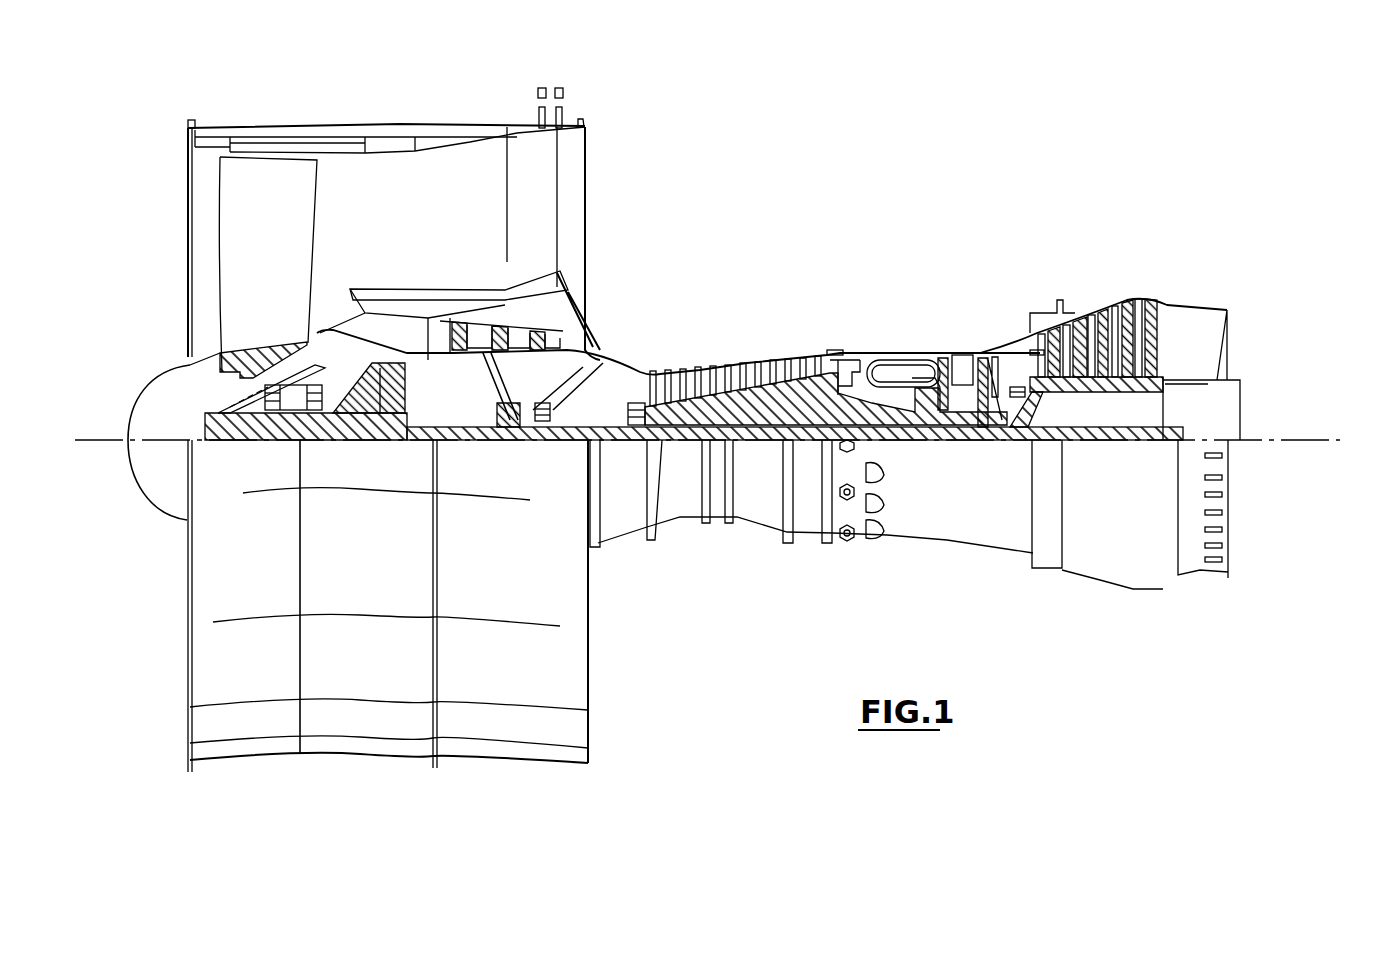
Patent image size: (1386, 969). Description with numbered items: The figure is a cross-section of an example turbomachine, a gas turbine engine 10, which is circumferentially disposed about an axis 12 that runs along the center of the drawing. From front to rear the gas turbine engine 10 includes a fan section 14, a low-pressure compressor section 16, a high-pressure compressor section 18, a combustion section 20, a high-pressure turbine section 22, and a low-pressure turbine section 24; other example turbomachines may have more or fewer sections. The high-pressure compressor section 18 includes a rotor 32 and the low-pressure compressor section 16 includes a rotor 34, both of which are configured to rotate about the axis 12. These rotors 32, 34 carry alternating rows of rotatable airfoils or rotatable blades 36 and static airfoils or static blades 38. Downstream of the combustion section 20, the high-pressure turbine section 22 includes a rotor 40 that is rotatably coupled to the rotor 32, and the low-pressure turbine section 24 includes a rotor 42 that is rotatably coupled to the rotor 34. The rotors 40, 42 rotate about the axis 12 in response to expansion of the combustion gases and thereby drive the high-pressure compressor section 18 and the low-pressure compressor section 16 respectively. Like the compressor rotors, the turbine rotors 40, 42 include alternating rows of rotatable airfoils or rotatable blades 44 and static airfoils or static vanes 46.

The gas turbine engine 10 is at (915, 168).
The axis 12 is at (1332, 440).
The fan section 14 is at (303, 124).
The low-pressure compressor section 16 is at (488, 383).
The high-pressure compressor section 18 is at (738, 355).
The combustion section 20 is at (926, 337).
The high-pressure turbine section 22 is at (966, 340).
The low-pressure turbine section 24 is at (1109, 331).
The rotor 32 is at (808, 400).
The rotor 34 is at (498, 385).
The rotatable blades 36 is at (475, 335).
The static blades 38 is at (520, 330).
The rotor 40 is at (1000, 372).
The rotor 42 is at (1120, 392).
The rotatable blades 44 is at (1100, 318).
The static vanes 46 is at (1115, 318).